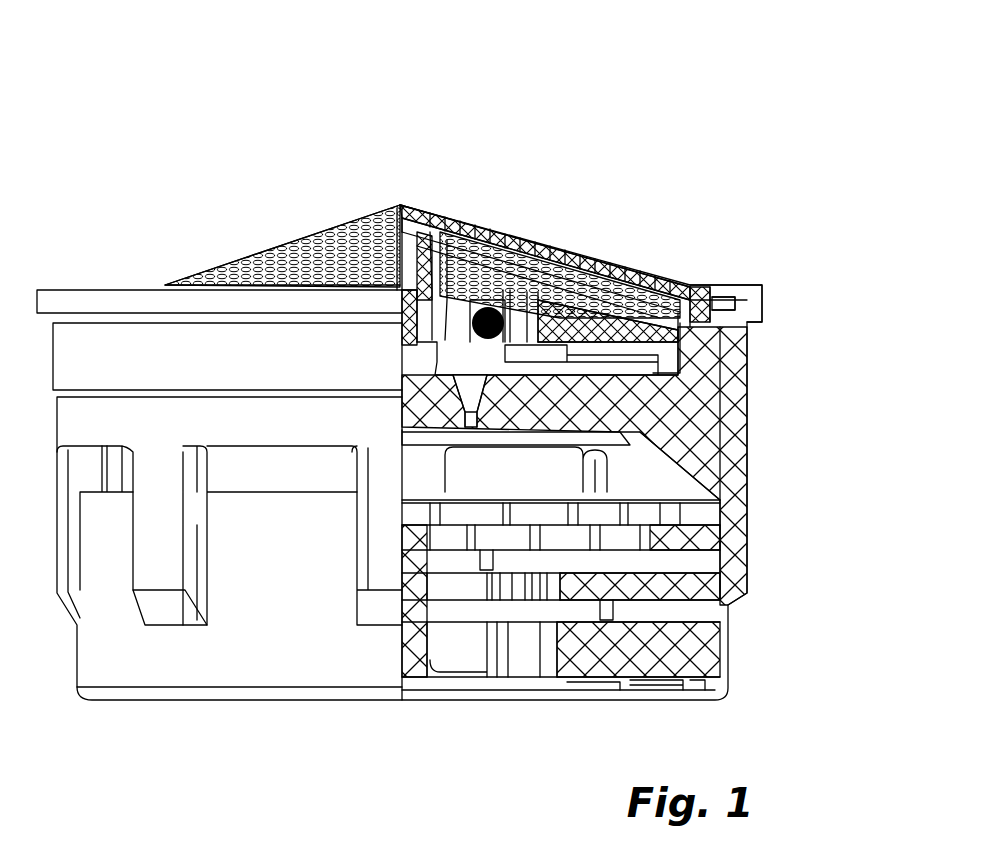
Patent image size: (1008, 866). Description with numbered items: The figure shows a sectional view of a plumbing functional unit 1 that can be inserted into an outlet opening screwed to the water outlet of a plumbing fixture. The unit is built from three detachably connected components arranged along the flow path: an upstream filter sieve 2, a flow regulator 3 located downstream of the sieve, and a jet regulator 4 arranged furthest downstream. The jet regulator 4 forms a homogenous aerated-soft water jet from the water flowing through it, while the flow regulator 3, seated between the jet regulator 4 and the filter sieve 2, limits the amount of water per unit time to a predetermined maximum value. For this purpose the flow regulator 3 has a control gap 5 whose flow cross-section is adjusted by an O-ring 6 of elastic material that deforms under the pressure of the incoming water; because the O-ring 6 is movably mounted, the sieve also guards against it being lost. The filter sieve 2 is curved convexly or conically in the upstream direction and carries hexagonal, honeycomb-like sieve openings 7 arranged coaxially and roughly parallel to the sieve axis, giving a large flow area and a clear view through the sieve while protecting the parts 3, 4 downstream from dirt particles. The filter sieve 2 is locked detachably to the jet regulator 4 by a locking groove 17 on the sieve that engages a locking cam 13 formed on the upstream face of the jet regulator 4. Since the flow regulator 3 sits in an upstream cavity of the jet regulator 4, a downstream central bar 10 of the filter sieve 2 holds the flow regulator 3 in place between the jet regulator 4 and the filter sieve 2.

The plumbing functional unit 1 is at (399, 452).
The filter sieve 2 is at (562, 284).
The flow regulator 3 is at (499, 294).
The jet regulator 4 is at (750, 487).
The control gap 5 is at (519, 317).
The O-ring 6 is at (456, 318).
The sieve openings 7 is at (480, 231).
The central bar 10 is at (402, 306).
The locking cam 13 is at (698, 289).
The locking groove 17 is at (723, 297).